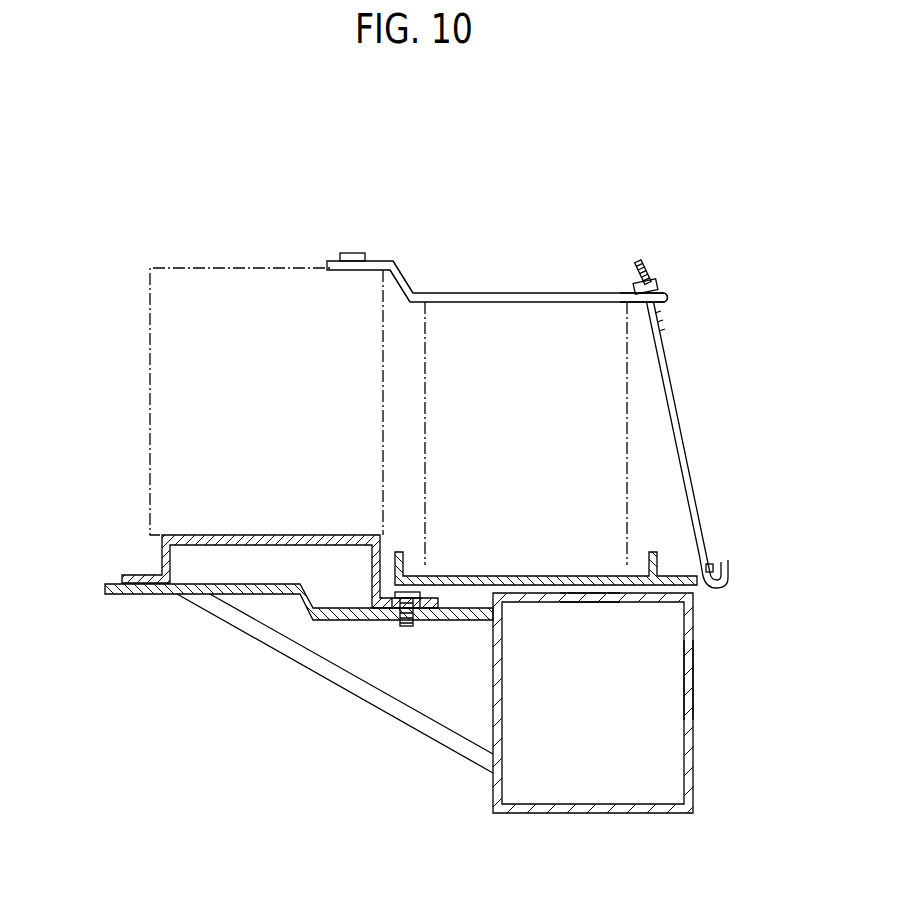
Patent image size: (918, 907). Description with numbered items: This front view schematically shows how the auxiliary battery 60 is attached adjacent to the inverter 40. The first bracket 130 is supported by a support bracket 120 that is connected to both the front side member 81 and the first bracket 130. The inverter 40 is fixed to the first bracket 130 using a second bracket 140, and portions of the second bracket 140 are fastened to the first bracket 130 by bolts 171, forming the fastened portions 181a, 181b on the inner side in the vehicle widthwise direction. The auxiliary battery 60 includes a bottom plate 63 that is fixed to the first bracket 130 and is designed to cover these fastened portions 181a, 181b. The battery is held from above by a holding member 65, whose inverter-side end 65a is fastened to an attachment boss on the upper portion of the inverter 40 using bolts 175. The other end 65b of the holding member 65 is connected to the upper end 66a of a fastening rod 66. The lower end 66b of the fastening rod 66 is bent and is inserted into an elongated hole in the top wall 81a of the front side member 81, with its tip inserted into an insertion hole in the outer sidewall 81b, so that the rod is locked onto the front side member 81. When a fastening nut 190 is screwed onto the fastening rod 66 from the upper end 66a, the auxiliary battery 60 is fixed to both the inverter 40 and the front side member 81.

The inverter 40 is at (231, 327).
The bolt 175 is at (353, 257).
The holding member 65 is at (497, 249).
The inverter-side end portion of holding member 65a is at (392, 262).
The front side member-side end portion of holding member 65b is at (625, 292).
The auxiliary battery 60 is at (570, 327).
The upper end of fastening rod 66a is at (645, 264).
The fastening nut 190 is at (658, 287).
The fastening rod 66 is at (678, 420).
The lower end of fastening rod 66b is at (727, 562).
The bottom plate 63 is at (460, 580).
The front side member 81 is at (641, 703).
The top wall of front side member 81a is at (590, 605).
The outer sidewall of front side member 81b is at (693, 680).
The bolt 171 is at (410, 627).
The fastened portion 181a is at (392, 603).
The fastened portion 181b is at (392, 603).
The support bracket 120 is at (323, 675).
The first bracket 130 is at (122, 596).
The second bracket 140 is at (147, 573).